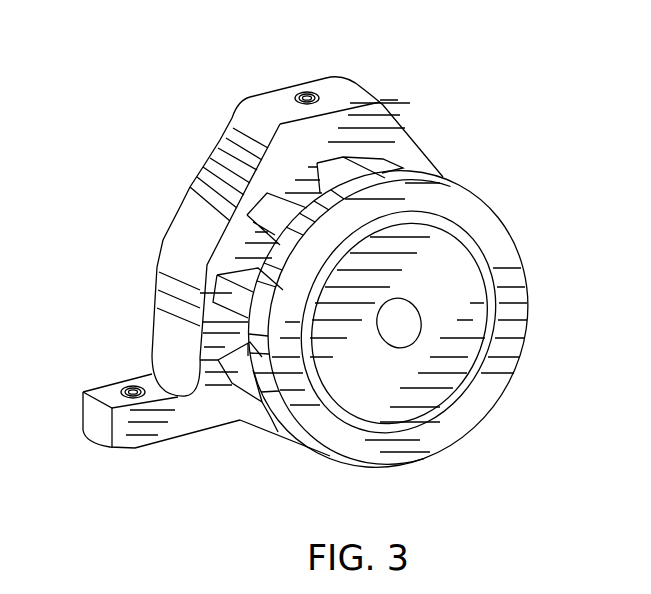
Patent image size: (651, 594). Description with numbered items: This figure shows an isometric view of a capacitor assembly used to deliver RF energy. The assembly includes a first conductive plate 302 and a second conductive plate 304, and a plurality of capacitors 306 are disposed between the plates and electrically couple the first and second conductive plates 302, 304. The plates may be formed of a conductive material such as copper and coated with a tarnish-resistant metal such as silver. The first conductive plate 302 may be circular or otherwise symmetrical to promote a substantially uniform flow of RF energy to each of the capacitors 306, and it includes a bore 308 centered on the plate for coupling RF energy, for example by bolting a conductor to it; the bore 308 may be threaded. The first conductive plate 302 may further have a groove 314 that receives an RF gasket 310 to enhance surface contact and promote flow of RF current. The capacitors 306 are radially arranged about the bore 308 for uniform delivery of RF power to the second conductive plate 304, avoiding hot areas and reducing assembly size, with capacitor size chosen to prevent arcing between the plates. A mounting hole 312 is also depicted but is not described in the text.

The first conductive plate 302 is at (500, 240).
The second conductive plate 304 is at (183, 438).
The plurality of capacitors 306 is at (160, 260).
The bore 308 is at (378, 335).
The RF gasket 310 is at (443, 404).
The mounting holes 312 is at (303, 90).
The groove 314 is at (488, 362).